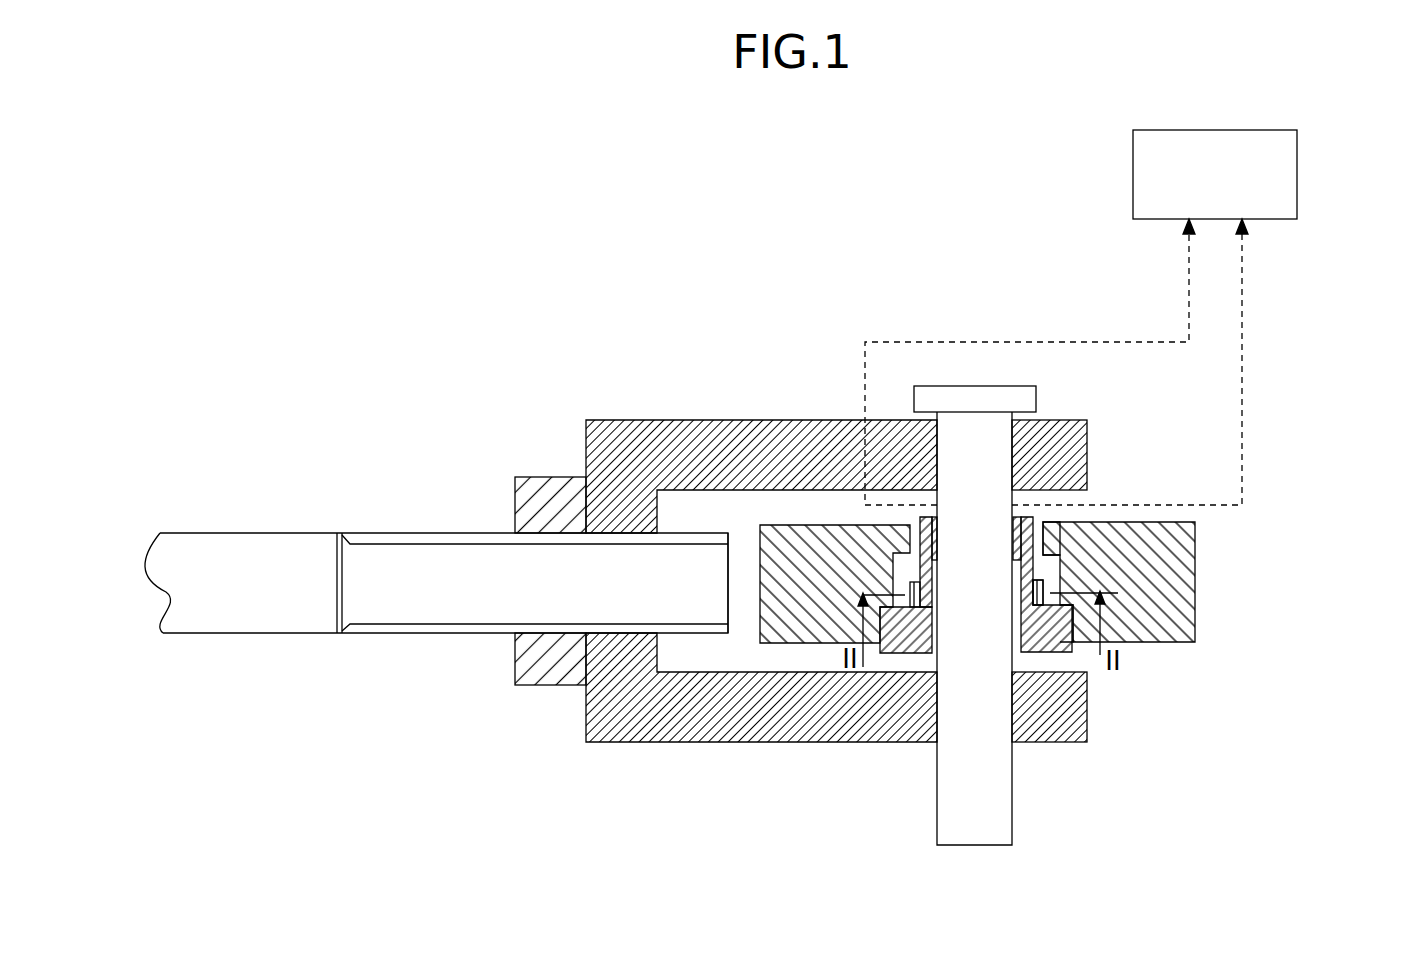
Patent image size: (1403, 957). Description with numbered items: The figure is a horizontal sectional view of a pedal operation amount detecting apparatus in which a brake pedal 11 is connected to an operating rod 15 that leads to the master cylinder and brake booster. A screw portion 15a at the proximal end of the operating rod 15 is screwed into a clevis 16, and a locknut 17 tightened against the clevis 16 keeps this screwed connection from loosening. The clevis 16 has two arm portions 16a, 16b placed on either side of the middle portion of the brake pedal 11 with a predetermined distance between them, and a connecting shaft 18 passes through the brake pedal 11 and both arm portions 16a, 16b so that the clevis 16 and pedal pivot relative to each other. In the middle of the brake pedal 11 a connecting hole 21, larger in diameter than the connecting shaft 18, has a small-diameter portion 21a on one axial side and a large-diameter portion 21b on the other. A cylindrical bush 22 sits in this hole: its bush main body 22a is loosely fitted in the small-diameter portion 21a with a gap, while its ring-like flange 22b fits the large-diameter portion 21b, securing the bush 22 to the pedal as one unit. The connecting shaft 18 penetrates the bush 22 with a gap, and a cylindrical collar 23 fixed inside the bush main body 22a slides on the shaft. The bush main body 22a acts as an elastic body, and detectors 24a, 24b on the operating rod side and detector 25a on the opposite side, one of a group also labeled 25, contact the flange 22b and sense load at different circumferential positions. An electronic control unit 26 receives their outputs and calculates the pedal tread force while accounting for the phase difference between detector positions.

The brake pedal 11 is at (1195, 620).
The operating rod 15 is at (222, 553).
The screw portion 15a is at (423, 634).
The clevis 16 is at (888, 613).
The arm portion 16a is at (1087, 456).
The arm portion 16b is at (1088, 712).
The locknut 17 is at (535, 672).
The connecting shaft 18 is at (973, 845).
The connecting hole 21 is at (1205, 647).
The small-diameter portion 21a is at (1046, 532).
The large-diameter portion 21b is at (1073, 642).
The bush 22 is at (955, 569).
The bush main body 22a is at (927, 517).
The flange 22b is at (910, 635).
The collar 23 is at (1018, 517).
The detector 24a is at (915, 590).
The detector 24b is at (915, 594).
The magnet 25 is at (1038, 592).
The detector 25a is at (1035, 578).
The electronic control unit (ECU) 26 is at (1193, 130).